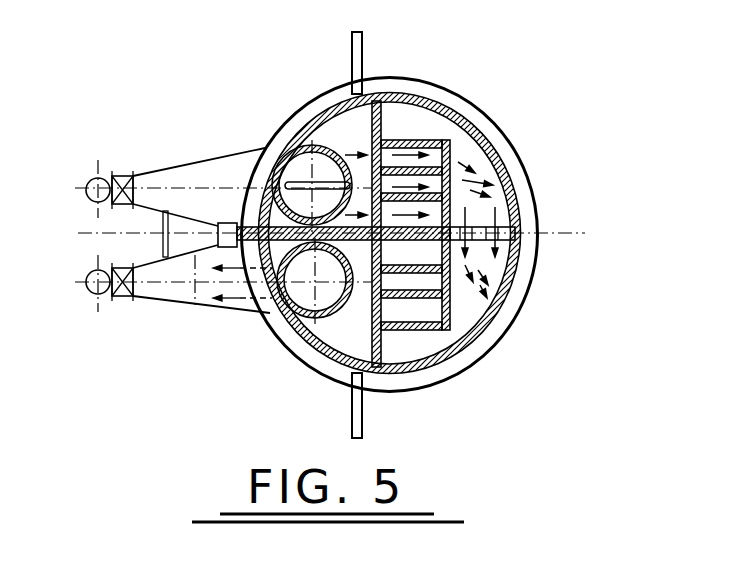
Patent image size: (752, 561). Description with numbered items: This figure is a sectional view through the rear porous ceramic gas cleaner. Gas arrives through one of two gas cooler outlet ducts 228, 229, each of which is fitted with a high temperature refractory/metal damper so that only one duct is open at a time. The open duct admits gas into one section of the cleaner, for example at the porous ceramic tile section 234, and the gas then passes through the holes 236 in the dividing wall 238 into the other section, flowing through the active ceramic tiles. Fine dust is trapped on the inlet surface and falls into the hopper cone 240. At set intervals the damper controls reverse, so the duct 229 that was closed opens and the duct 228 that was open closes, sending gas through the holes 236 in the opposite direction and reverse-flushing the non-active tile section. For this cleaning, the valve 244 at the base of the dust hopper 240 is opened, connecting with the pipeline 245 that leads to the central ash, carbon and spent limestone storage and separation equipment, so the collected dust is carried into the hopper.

The gas cooler outlet duct 228 is at (293, 139).
The gas cooler outlet duct 229 is at (301, 334).
The porous ceramic tile section 234 is at (410, 125).
The holes 236 is at (515, 208).
The dividing wall 238 is at (254, 210).
The hopper cone 240 is at (212, 324).
The valve 244 is at (123, 172).
The pipeline 245 is at (102, 295).